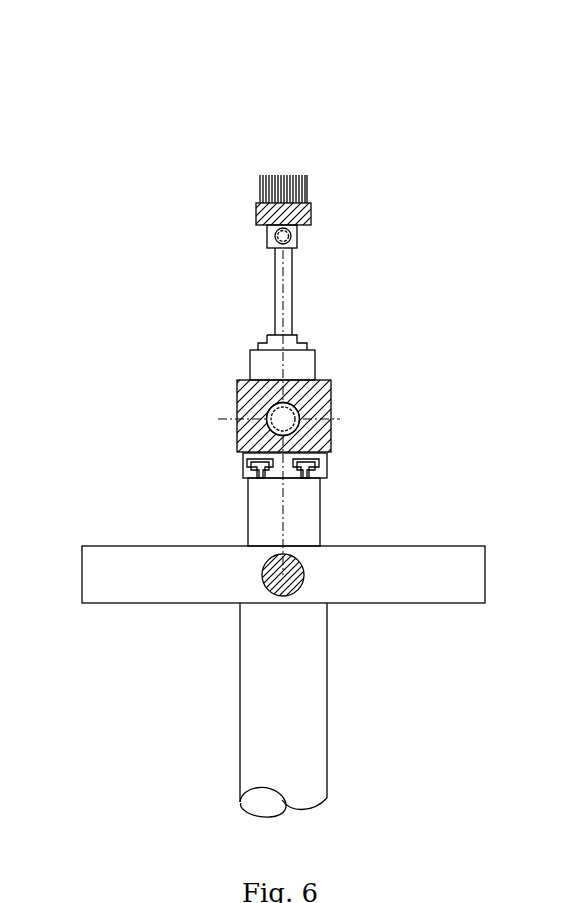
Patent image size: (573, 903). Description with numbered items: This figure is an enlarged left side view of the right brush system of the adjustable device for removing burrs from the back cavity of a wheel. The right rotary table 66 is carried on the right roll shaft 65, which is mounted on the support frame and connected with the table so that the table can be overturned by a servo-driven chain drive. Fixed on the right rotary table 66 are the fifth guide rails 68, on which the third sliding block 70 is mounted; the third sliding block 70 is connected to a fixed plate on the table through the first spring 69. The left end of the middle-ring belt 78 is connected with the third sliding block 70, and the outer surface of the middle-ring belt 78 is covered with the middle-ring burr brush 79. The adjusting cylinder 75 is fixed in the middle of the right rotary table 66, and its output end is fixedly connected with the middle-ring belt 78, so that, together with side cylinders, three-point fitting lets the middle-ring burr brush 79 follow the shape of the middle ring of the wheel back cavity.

The right roll shaft 65 is at (282, 573).
The right rotary table 66 is at (170, 572).
The fifth guide rails 68 is at (313, 477).
The first spring 69 is at (267, 418).
The third sliding block 70 is at (331, 410).
The adjusting cylinder 75 is at (305, 364).
The middle-ring belt 78 is at (307, 212).
The middle-ring burr brush 79 is at (305, 173).